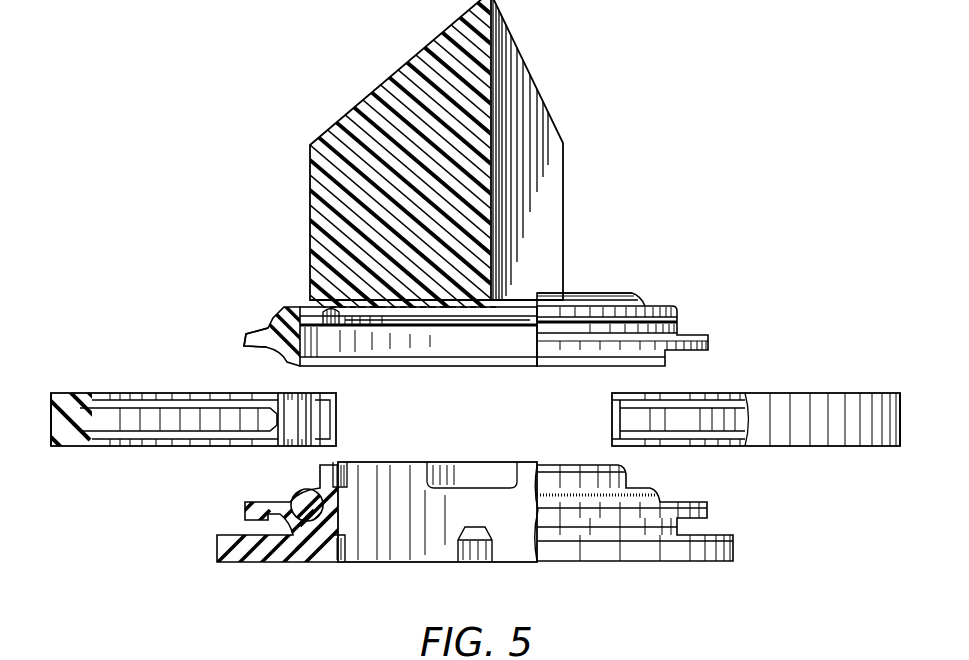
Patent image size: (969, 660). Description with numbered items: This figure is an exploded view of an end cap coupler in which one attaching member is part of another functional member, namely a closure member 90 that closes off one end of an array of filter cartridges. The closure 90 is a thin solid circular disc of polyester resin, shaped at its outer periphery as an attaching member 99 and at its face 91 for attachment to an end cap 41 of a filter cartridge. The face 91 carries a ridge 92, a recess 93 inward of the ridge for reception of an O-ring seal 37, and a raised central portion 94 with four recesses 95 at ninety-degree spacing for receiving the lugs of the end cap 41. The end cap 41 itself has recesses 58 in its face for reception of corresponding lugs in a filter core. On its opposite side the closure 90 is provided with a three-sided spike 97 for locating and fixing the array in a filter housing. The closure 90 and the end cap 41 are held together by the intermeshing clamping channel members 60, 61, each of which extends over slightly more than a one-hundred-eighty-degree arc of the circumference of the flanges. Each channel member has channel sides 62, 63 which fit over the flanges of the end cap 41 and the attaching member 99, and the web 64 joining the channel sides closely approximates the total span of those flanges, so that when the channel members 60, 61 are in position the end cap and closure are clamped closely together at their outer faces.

The three-sided spike 97 is at (392, 72).
The closure member 90 is at (640, 288).
The inner face 91 is at (588, 293).
The ridge 92 is at (318, 328).
The recess 93 is at (303, 322).
The raised central portion 94 is at (347, 325).
The recesses 95 is at (345, 322).
The attaching member 99 is at (266, 343).
The clamping channel member 60 is at (79, 380).
The clamping channel member 61 is at (827, 380).
The channel side 62 is at (101, 393).
The channel side 63 is at (92, 433).
The web 64 is at (52, 425).
The recesses 58 is at (472, 547).
The end cap 41 is at (258, 575).
The O-ring seal 37 is at (303, 490).